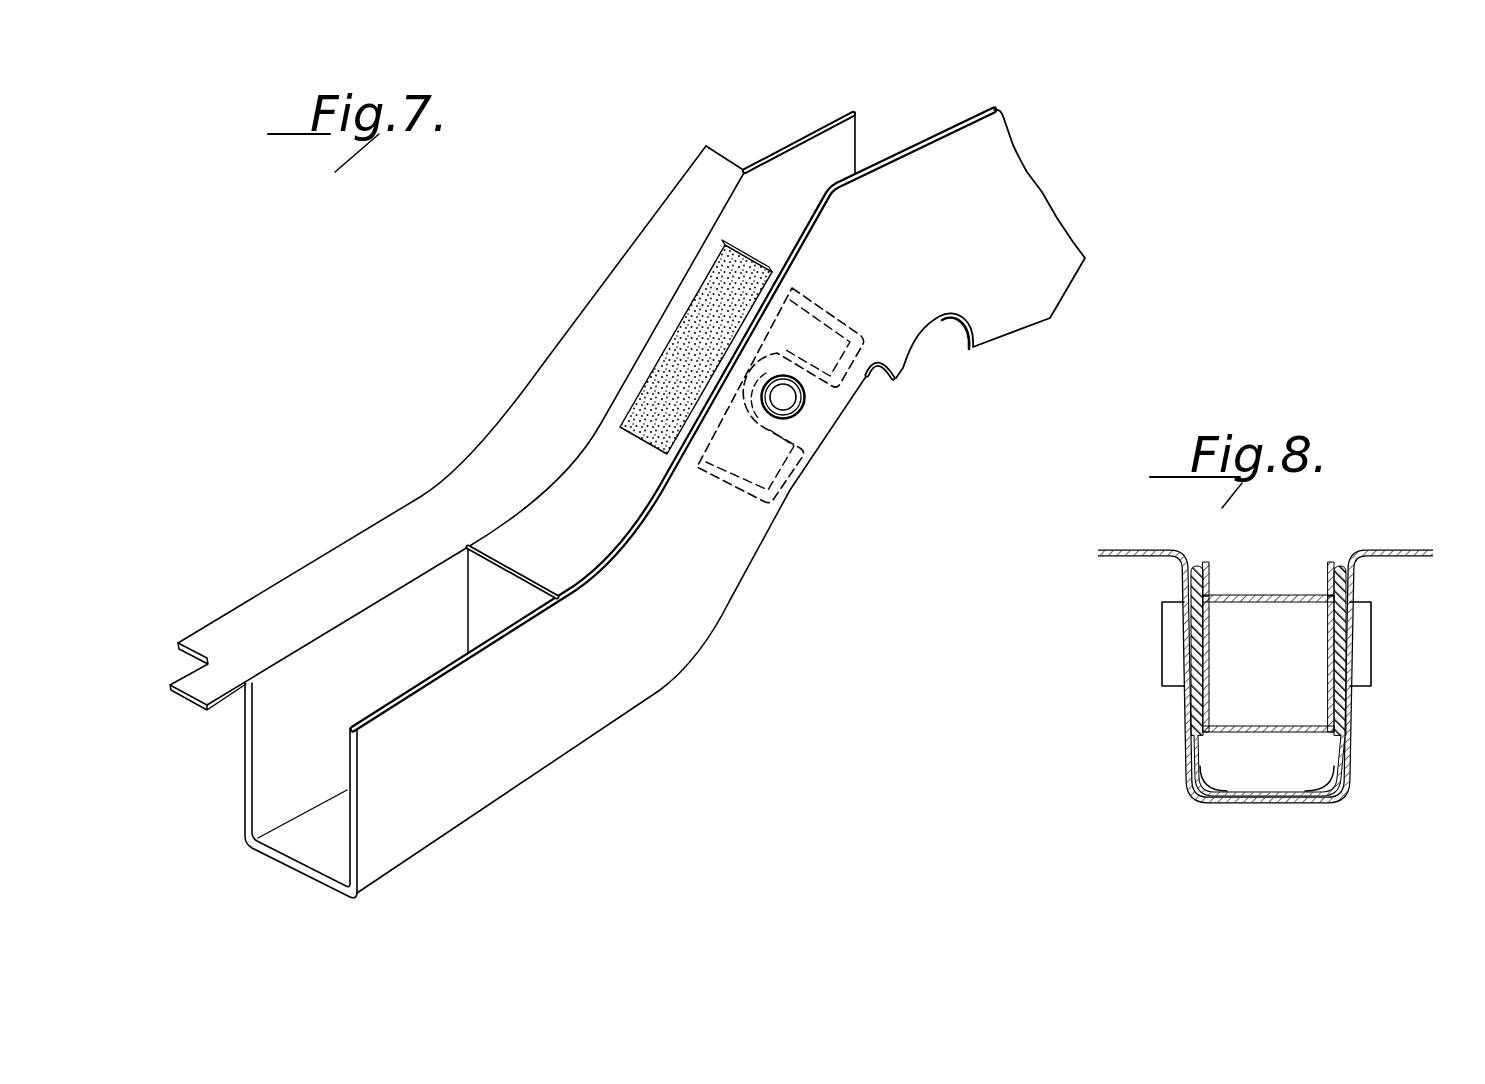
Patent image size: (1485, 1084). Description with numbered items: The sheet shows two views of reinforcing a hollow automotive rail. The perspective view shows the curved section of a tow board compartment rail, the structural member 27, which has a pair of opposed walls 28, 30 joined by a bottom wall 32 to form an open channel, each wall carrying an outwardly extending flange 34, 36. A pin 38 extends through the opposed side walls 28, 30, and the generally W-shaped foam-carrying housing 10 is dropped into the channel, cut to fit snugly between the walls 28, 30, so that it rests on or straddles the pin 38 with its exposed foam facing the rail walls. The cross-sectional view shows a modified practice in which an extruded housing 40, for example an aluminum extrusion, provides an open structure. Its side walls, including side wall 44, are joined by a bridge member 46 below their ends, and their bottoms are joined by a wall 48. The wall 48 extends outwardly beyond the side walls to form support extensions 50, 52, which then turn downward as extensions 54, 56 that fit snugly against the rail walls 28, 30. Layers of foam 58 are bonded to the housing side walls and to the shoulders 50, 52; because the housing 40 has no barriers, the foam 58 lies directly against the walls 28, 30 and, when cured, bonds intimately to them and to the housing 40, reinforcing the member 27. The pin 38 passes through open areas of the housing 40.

In FIG. 7, the housing 10 is at (616, 413).
In FIG. 7, the structural member 27 is at (1022, 203).
In FIG. 8, the structural member 27 is at (1376, 585).
In FIG. 8, the side wall 28 is at (1184, 697).
In FIG. 8, the side wall 30 is at (1348, 736).
In FIG. 8, the bottom wall 32 is at (1265, 805).
In FIG. 8, the flange 34 is at (1127, 558).
In FIG. 8, the flange 36 is at (1393, 558).
In FIG. 7, the pin 38 is at (767, 406).
In FIG. 8, the pin 38 is at (1170, 634).
In FIG. 8, the housing 40 is at (1241, 580).
In FIG. 8, the side wall 44 is at (1337, 662).
In FIG. 8, the bridge member 46 is at (1285, 596).
In FIG. 8, the wall 48 is at (1243, 769).
In FIG. 8, the support extension 50 is at (1192, 720).
In FIG. 8, the support extension 52 is at (1336, 768).
In FIG. 8, the extension 54 is at (1227, 797).
In FIG. 8, the extension 56 is at (1298, 802).
In FIG. 8, the foam layer 58 is at (1193, 572).